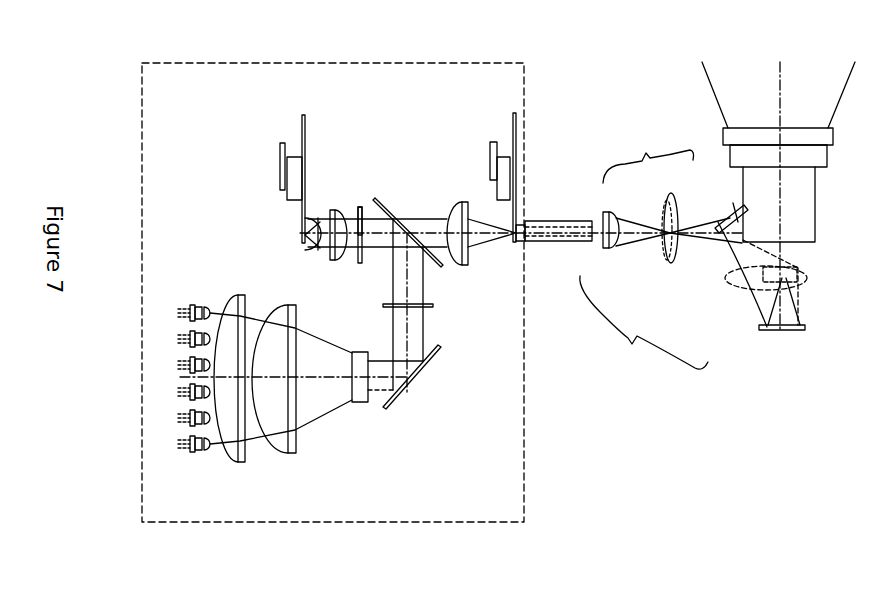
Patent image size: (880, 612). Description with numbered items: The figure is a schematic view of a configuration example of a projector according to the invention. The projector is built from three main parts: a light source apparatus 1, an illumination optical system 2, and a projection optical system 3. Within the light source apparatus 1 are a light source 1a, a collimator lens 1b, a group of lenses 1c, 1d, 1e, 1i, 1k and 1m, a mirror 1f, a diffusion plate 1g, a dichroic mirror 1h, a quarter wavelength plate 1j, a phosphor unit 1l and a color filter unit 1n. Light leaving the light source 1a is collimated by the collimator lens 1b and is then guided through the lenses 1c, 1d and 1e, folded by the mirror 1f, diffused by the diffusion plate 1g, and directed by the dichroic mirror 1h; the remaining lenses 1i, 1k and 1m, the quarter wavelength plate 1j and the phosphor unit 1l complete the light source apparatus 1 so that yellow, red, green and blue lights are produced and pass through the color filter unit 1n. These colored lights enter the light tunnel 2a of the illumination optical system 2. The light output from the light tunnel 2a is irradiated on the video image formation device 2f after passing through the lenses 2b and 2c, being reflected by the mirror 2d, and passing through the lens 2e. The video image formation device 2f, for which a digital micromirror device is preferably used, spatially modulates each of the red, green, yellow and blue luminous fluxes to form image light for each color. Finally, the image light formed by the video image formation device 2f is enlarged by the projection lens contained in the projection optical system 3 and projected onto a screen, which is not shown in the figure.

The light source apparatus 1 is at (529, 437).
The light source 1a is at (196, 457).
The collimator lens 1b is at (210, 456).
The lens 1c is at (242, 465).
The lens 1d is at (293, 455).
The lens 1e is at (363, 404).
The mirror 1f is at (443, 347).
The diffusion plate 1g is at (434, 302).
The dichroic mirror 1h is at (374, 200).
The lens 1i is at (358, 266).
The ¼ wavelength plate 1j is at (292, 202).
The lens 1k is at (332, 208).
The phosphor unit 1l is at (359, 206).
The lens 1m is at (460, 201).
The color filter unit 1n is at (500, 157).
The illumination optical system 2 is at (644, 252).
The light tunnel 2a is at (579, 250).
The lens 2b is at (605, 212).
The lens 2c is at (663, 258).
The mirror 2d is at (730, 204).
The lens 2e is at (722, 282).
The video image formation device 2f is at (759, 327).
The projection optical system 3 is at (805, 225).